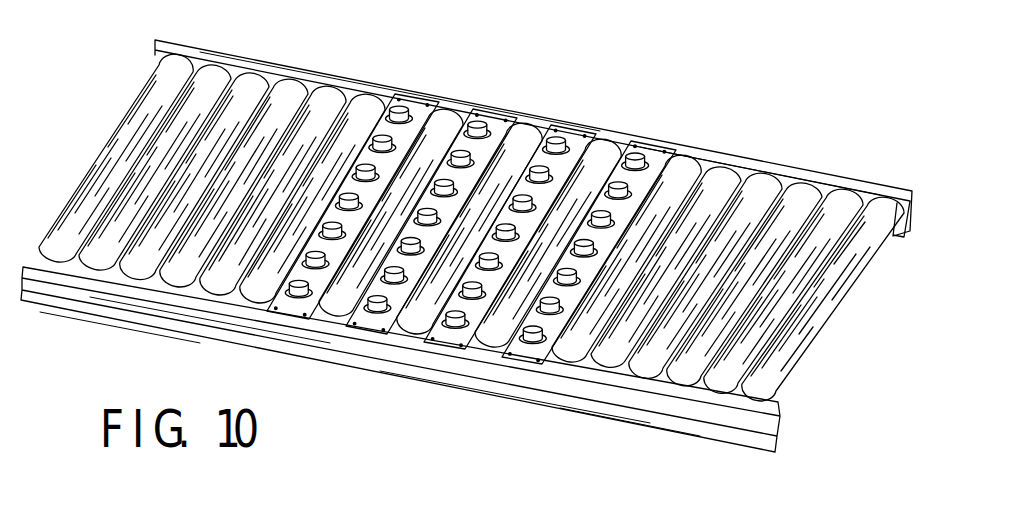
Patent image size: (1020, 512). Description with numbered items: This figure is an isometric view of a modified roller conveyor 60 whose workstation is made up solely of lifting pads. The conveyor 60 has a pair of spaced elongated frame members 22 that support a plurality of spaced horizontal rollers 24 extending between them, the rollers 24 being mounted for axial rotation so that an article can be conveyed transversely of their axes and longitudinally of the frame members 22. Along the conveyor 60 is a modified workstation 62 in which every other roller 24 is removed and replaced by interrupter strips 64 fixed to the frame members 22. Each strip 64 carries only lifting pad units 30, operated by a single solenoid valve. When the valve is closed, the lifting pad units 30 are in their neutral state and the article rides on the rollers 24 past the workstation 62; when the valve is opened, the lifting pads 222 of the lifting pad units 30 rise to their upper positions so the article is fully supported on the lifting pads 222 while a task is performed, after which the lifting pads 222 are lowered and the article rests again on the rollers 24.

The frame members 22 is at (27, 266).
The rollers 24 is at (283, 87).
The lifting pad units 30 is at (400, 104).
The modified roller conveyor 60 is at (780, 93).
The modified workstation 62 is at (543, 103).
The interrupter strips 64 is at (487, 115).
The lifting pads 222 is at (466, 351).